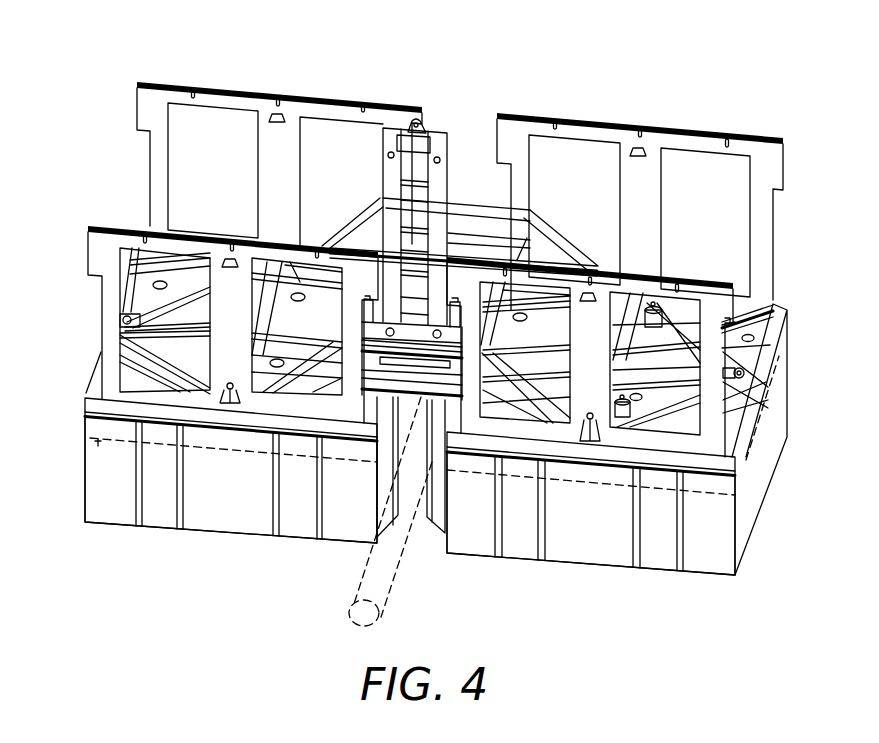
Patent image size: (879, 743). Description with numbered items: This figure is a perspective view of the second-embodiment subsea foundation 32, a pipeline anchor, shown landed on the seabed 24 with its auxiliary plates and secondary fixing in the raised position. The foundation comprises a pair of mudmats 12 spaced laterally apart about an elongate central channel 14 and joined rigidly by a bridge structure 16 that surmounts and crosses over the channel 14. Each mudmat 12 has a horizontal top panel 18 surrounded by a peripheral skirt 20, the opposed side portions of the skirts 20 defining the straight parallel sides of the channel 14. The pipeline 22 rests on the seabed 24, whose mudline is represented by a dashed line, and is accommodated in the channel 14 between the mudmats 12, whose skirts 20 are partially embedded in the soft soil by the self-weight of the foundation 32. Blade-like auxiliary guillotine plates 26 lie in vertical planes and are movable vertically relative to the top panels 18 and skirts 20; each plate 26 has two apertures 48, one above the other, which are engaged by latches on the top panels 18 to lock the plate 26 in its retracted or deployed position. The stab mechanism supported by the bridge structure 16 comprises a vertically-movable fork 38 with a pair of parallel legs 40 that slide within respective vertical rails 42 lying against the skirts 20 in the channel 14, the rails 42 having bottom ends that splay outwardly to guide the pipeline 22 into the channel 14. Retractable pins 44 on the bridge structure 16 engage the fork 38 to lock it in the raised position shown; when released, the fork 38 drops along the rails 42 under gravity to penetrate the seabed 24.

The mudmat 12 is at (66, 509).
The channel 14 is at (425, 557).
The bridge structure 16 is at (548, 240).
The top panel 18 is at (745, 350).
The skirt 20 is at (222, 523).
The pipeline 22 is at (350, 600).
The seabed 24 is at (76, 450).
The auxiliary guillotine plate 26 is at (335, 107).
The subsea foundation 32 is at (100, 73).
The fork 38 is at (449, 109).
The leg 40 is at (388, 180).
The rail 42 is at (382, 487).
The pin 44 is at (383, 325).
The aperture 48 is at (277, 112).